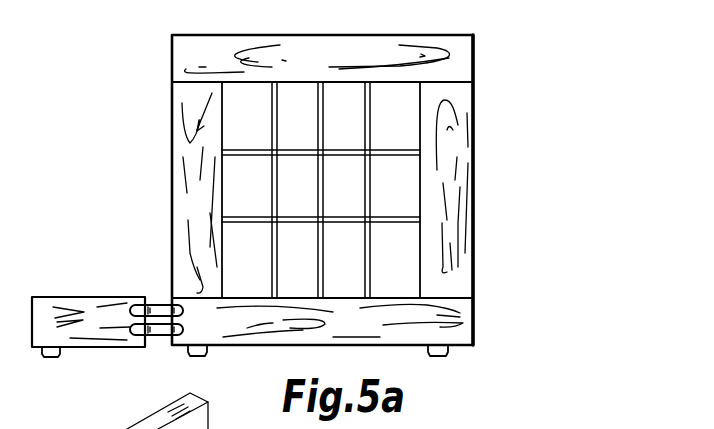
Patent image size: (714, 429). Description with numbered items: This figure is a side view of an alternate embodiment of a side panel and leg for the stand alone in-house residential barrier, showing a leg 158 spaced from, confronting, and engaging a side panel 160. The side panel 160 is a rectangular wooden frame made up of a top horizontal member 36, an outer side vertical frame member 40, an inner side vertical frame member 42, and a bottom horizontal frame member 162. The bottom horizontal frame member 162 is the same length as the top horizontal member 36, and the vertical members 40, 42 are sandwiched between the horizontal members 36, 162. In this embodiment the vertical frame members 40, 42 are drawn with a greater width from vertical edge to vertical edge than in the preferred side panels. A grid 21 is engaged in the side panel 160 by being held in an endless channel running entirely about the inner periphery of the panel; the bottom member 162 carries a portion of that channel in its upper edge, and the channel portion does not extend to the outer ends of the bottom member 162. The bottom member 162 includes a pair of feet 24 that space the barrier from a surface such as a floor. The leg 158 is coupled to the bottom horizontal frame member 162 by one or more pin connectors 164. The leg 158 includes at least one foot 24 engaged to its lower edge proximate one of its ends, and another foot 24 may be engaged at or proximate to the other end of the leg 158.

The side panel 160 is at (477, 153).
The top horizontal frame member 36 is at (474, 58).
The inner side vertical frame member 42 is at (170, 172).
The outer side vertical frame member 40 is at (478, 187).
The grid 21 is at (405, 222).
The bottom horizontal frame member 162 is at (476, 313).
The foot 24 is at (52, 358).
The leg 158 is at (68, 297).
The pin connector 164 is at (157, 305).